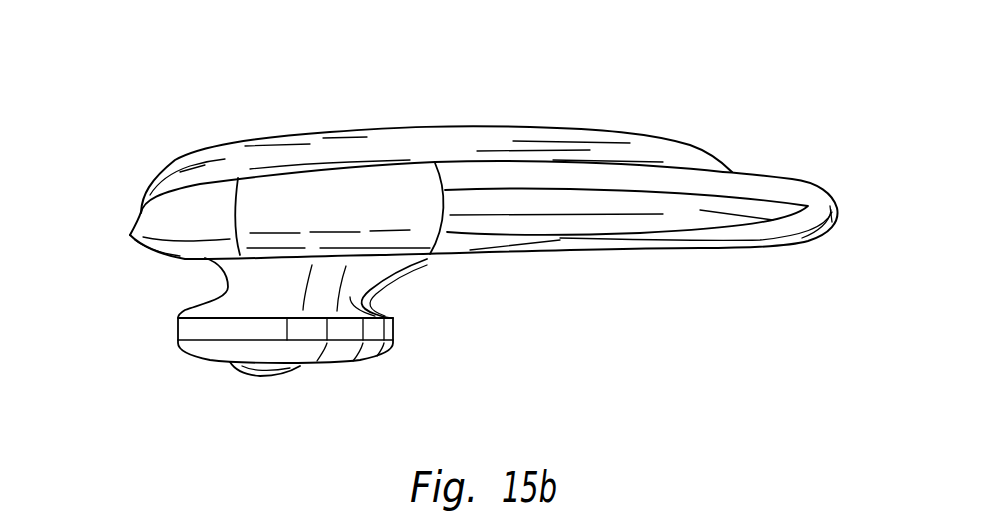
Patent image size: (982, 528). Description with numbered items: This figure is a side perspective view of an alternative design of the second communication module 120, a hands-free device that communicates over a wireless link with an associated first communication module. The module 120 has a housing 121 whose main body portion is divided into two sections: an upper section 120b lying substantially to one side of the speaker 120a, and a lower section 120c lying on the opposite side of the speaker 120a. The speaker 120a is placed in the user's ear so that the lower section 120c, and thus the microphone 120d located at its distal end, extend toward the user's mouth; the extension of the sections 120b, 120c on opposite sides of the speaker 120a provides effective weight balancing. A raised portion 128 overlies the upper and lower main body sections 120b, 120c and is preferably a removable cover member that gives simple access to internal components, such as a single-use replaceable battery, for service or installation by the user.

The alternative second communication module 120 is at (470, 333).
The speaker 120a is at (275, 383).
The upper section 120b is at (130, 247).
The lower section 120c is at (678, 261).
The microphone 120d is at (837, 233).
The housing 121 is at (740, 188).
The raised portion 128 is at (460, 127).